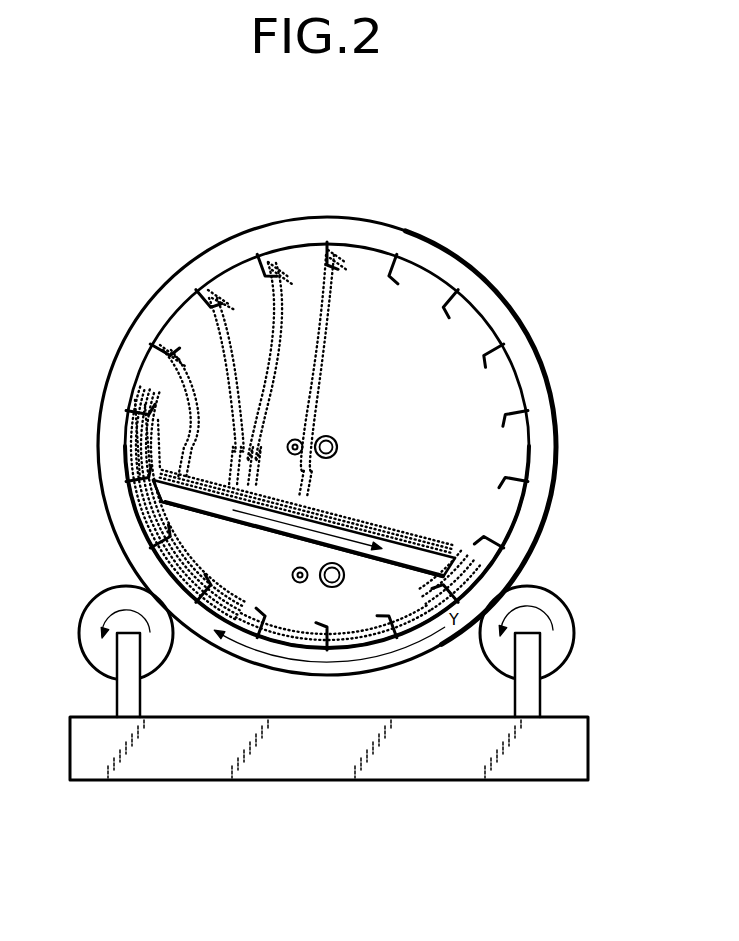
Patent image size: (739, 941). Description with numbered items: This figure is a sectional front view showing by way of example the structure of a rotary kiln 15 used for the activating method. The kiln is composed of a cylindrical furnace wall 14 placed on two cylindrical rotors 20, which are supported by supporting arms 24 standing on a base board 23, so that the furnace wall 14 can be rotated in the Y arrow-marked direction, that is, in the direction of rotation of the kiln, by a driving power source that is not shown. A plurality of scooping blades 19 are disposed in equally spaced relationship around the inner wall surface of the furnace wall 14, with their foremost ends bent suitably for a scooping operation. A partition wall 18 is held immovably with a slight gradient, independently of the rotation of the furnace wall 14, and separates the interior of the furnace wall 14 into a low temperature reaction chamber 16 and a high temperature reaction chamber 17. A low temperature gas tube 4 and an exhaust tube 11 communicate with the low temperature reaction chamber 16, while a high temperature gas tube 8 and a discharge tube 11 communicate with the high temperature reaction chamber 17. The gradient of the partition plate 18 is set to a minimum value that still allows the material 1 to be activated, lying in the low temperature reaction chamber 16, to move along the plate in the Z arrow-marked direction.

The material 1 is at (399, 532).
The low temperature gas tube 4 is at (326, 434).
The high temperature gas tube 8 is at (345, 577).
The exhaust tube 11 is at (295, 438).
The cylindrical furnace wall 14 is at (548, 460).
The rotary kiln 15 is at (486, 278).
The low temperature reaction chamber 16 is at (462, 329).
The high temperature reaction chamber 17 is at (170, 520).
The partition wall 18 is at (208, 504).
The scooping blades 19 is at (514, 401).
The cylindrical rotors 20 is at (92, 619).
The base board 23 is at (466, 758).
The supporting arms 24 is at (116, 692).